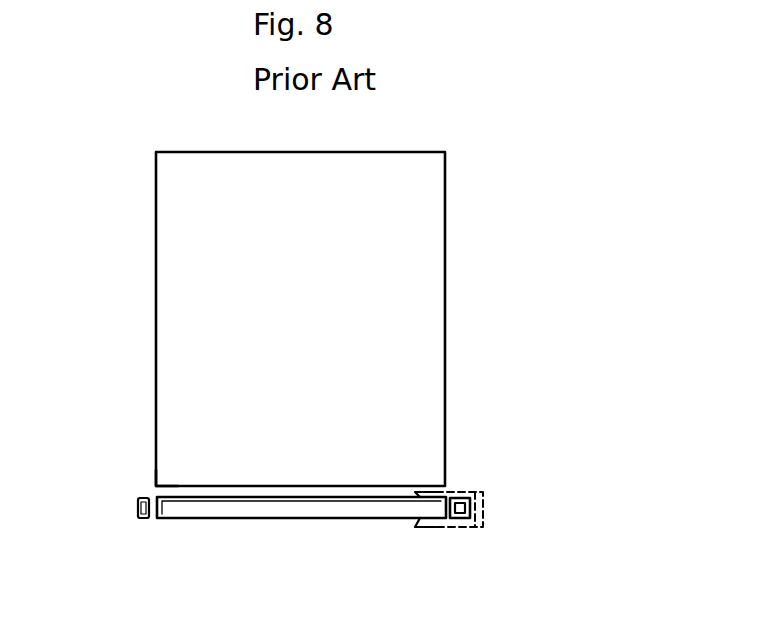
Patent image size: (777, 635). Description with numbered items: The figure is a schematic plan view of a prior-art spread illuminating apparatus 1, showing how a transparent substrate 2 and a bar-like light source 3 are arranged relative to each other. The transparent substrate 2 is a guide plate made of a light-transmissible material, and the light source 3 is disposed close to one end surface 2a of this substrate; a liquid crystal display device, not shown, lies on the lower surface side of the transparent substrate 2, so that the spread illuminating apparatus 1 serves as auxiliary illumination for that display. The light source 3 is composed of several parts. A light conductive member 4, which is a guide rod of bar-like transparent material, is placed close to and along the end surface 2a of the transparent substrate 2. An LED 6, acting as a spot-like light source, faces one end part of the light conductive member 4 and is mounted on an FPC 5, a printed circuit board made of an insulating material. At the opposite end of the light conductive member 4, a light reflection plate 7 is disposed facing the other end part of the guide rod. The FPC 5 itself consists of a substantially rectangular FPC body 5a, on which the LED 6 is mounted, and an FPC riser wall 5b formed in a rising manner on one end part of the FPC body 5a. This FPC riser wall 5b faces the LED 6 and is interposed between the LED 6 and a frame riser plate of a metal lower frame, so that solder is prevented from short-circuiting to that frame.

The spread illuminating apparatus 1 is at (577, 249).
The transparent substrate 2 is at (430, 285).
The end surface 2a is at (178, 486).
The light source 3 is at (500, 514).
The light conductive member 4 is at (385, 519).
The FPC 5 is at (532, 462).
The FPC body 5a is at (464, 493).
The FPC riser wall 5b is at (478, 493).
The LED 6 is at (461, 510).
The light reflection plate 7 is at (143, 519).